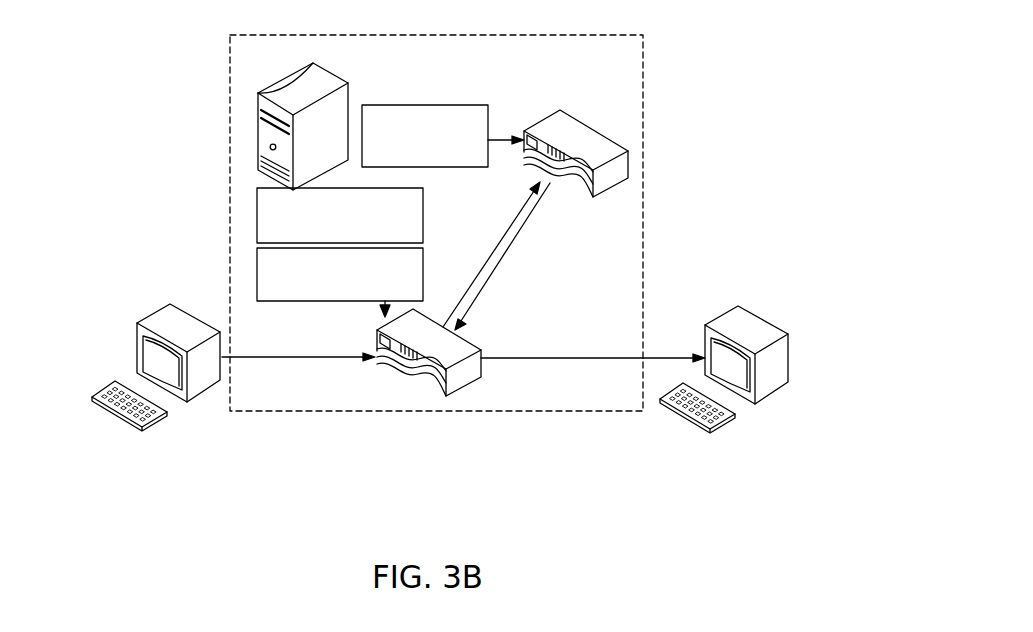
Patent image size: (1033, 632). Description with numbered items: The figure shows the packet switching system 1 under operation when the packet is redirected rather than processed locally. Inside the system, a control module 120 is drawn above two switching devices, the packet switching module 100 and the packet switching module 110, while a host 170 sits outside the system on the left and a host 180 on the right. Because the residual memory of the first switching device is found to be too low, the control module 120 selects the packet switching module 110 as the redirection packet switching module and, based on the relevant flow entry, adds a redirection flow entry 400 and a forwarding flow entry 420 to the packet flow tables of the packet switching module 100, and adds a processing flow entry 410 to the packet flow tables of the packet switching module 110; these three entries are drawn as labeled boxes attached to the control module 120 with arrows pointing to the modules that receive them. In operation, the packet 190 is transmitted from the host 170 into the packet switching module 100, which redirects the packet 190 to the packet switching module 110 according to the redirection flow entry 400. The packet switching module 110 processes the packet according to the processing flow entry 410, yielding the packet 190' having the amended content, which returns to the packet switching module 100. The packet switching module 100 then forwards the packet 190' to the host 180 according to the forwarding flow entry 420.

The packet switching system 1 is at (643, 66).
The packet switching module 100 is at (470, 342).
The packet switching module 110 is at (630, 160).
The control module 120 is at (348, 102).
The host 170 is at (133, 340).
The host 180 is at (792, 350).
The packet 190 is at (381, 271).
The packet having amended content 190' is at (580, 272).
The redirection flow entry 400 is at (257, 215).
The processing flow entry 410 is at (490, 113).
The forwarding flow entry 420 is at (257, 258).